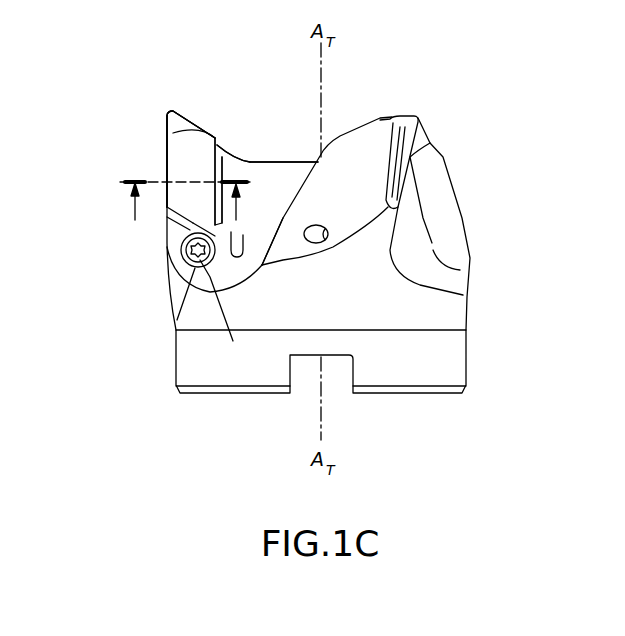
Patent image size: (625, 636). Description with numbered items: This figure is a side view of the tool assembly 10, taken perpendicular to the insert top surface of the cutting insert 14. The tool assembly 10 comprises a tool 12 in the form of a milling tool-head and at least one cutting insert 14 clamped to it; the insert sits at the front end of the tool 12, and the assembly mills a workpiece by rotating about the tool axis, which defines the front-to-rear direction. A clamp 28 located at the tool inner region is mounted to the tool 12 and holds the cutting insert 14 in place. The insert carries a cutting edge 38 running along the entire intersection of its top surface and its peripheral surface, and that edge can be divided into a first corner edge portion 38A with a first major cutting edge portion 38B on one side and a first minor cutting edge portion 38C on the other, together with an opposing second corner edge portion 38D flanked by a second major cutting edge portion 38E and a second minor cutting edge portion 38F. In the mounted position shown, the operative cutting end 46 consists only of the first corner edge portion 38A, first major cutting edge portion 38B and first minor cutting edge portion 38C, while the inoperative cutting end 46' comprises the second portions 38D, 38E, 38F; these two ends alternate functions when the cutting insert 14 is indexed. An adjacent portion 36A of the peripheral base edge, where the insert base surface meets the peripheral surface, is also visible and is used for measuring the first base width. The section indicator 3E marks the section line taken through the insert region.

The tool assembly 10 is at (422, 78).
The tool 12 is at (175, 355).
The cutting insert 14 is at (163, 150).
The clamp 28 is at (180, 275).
The adjacent portion of the peripheral base edge 36A is at (173, 133).
The cutting edge 38 is at (166, 112).
The first corner edge portion 38A is at (191, 159).
The first major cutting edge portion 38B is at (165, 150).
The first minor cutting edge portion 38C is at (225, 147).
The second corner edge portion 38D is at (224, 315).
The second major cutting edge portion 38E is at (218, 220).
The second minor cutting edge portion 38F is at (178, 316).
The operative cutting end 46 is at (134, 105).
The inoperative cutting end 46' is at (296, 274).
The section line 3E is at (135, 220).